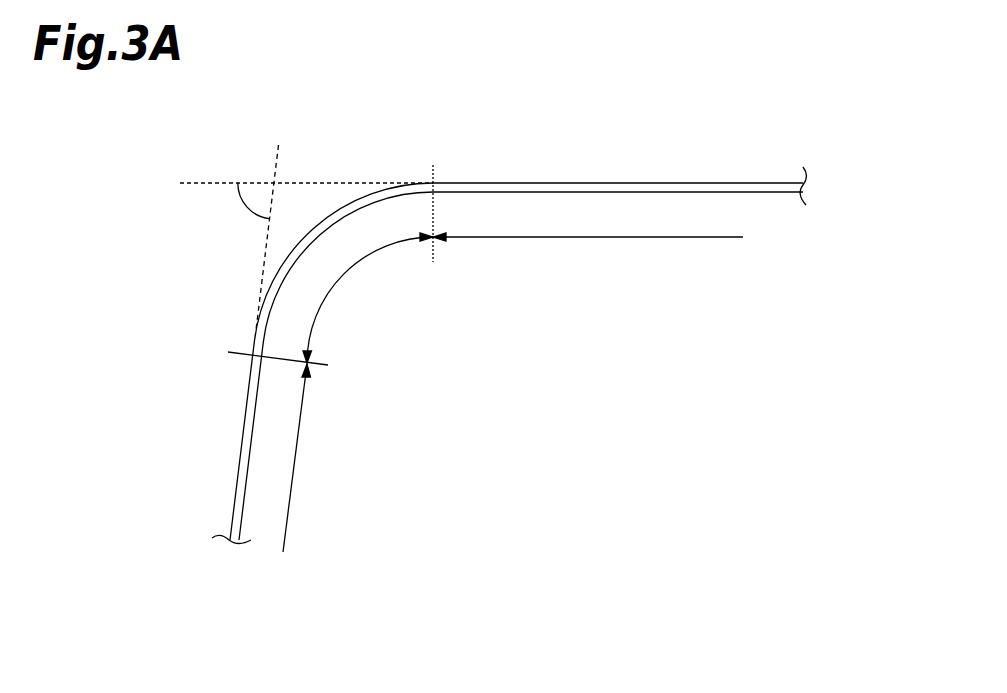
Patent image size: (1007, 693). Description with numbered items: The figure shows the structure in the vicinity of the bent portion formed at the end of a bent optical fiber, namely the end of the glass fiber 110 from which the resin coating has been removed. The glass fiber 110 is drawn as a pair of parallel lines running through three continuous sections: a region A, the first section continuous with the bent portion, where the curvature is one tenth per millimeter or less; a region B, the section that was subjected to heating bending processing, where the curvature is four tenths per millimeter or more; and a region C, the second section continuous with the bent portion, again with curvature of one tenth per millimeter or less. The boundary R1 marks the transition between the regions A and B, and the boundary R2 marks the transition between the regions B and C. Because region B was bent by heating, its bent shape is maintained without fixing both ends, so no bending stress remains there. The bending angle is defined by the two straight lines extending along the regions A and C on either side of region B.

The glass fiber 110 is at (673, 182).
The boundary between regions A and B R1 is at (216, 350).
The boundary between regions B and C R2 is at (433, 150).
The region A is at (293, 477).
The region B is at (355, 273).
The region C is at (627, 238).